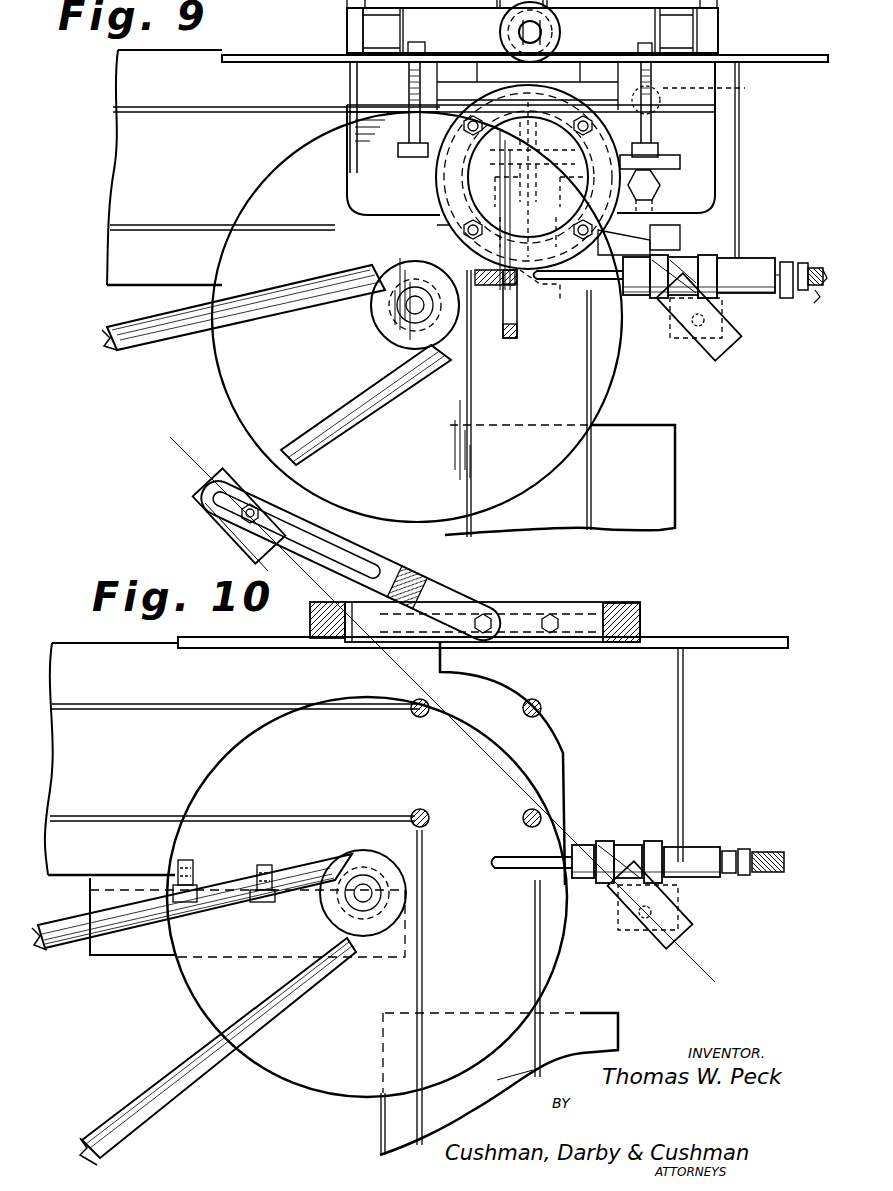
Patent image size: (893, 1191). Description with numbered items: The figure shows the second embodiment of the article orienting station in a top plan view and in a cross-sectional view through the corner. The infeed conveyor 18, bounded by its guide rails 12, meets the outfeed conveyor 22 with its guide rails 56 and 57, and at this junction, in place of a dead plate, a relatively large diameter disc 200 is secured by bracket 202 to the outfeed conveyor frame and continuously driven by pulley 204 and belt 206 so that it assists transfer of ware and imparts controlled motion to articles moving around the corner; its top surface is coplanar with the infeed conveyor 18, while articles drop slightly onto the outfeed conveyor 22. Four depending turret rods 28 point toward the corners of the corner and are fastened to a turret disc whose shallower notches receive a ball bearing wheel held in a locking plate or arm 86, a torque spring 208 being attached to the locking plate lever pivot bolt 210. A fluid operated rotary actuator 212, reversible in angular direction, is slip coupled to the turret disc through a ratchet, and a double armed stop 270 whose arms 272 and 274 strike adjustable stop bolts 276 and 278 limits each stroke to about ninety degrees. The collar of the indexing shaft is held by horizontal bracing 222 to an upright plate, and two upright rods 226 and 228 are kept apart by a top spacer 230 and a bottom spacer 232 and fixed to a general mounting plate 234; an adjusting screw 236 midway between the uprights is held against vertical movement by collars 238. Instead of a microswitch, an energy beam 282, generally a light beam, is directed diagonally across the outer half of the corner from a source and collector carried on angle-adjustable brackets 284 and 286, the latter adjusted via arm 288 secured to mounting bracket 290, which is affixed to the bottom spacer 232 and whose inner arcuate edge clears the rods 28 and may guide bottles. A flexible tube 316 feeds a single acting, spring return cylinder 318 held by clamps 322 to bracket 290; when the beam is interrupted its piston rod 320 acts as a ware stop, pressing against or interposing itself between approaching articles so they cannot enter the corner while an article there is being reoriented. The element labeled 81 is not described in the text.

In FIG. 9, the guide rails 12 is at (582, 504).
In FIG. 10, the guide rails 12 is at (497, 1080).
In FIG. 9, the infeed conveyor 18 is at (673, 472).
In FIG. 10, the infeed conveyor 18 is at (574, 1012).
In FIG. 9, the outfeed conveyor 22 is at (110, 277).
In FIG. 10, the outfeed conveyor 22 is at (118, 642).
In FIG. 10, the turret rods 28 is at (420, 718).
In FIG. 9, the guide rail 56 is at (160, 107).
In FIG. 10, the guide rail 56 is at (112, 709).
In FIG. 9, the guide rail 57 is at (137, 225).
In FIG. 10, the guide rail 57 is at (115, 815).
In FIG. 9, the bracket 81 is at (676, 238).
In FIG. 9, the locking plate or arm 86 is at (642, 256).
In FIG. 9, the disc 200 is at (222, 372).
In FIG. 10, the disc 200 is at (305, 1088).
In FIG. 10, the bracket 202 is at (132, 958).
In FIG. 9, the pulley 204 is at (378, 331).
In FIG. 10, the pulley 204 is at (326, 921).
In FIG. 9, the belt 206 is at (168, 306).
In FIG. 10, the belt 206 is at (165, 1075).
In FIG. 9, the torque spring 208 is at (722, 92).
In FIG. 9, the locking plate lever pivot bolt 210 is at (669, 100).
In FIG. 9, the rotary actuator 212 is at (440, 226).
In FIG. 9, the horizontal bracing 222 is at (712, 202).
In FIG. 9, the upright rod or pole 226 is at (688, 38).
In FIG. 10, the upright rod or pole 226 is at (630, 610).
In FIG. 9, the upright rod or pole 228 is at (372, 22).
In FIG. 10, the upright rod or pole 228 is at (308, 622).
In FIG. 9, the top spacer 230 is at (400, 36).
In FIG. 10, the bottom spacer 232 is at (412, 584).
In FIG. 9, the general mounting plate 234 is at (525, 58).
In FIG. 10, the general mounting plate 234 is at (748, 642).
In FIG. 9, the adjusting screw 236 is at (547, 31).
In FIG. 9, the collars 238 is at (503, 33).
In FIG. 9, the double armed stop 270 is at (513, 189).
In FIG. 9, the arm 272 is at (506, 346).
In FIG. 9, the arm 274 is at (716, 172).
In FIG. 9, the stop bolt 276 is at (404, 160).
In FIG. 9, the stop bolt 278 is at (662, 152).
In FIG. 10, the energy beam 282 is at (420, 716).
In FIG. 9, the bracket 284 is at (733, 352).
In FIG. 10, the bracket 284 is at (688, 927).
In FIG. 10, the bracket 286 is at (195, 494).
In FIG. 10, the arm 288 is at (326, 548).
In FIG. 9, the mounting bracket 290 is at (737, 160).
In FIG. 10, the mounting bracket 290 is at (684, 822).
In FIG. 9, the flexible tube 316 is at (812, 300).
In FIG. 10, the flexible tube 316 is at (780, 840).
In FIG. 9, the cylinder 318 is at (748, 258).
In FIG. 10, the cylinder 318 is at (700, 845).
In FIG. 9, the piston rod 320 is at (600, 295).
In FIG. 10, the piston rod 320 is at (525, 857).
In FIG. 10, the clamps 322 is at (602, 843).